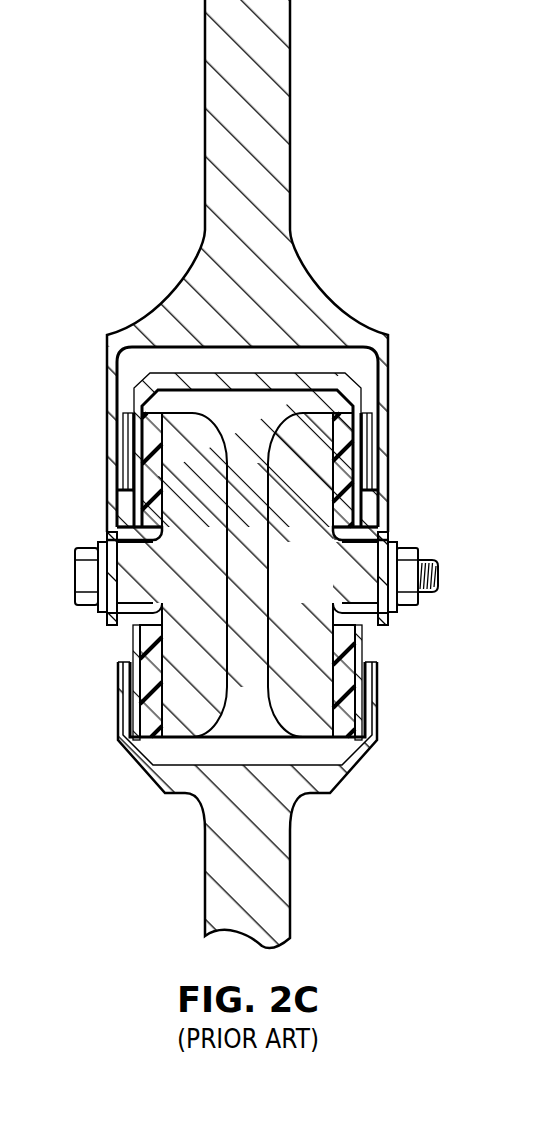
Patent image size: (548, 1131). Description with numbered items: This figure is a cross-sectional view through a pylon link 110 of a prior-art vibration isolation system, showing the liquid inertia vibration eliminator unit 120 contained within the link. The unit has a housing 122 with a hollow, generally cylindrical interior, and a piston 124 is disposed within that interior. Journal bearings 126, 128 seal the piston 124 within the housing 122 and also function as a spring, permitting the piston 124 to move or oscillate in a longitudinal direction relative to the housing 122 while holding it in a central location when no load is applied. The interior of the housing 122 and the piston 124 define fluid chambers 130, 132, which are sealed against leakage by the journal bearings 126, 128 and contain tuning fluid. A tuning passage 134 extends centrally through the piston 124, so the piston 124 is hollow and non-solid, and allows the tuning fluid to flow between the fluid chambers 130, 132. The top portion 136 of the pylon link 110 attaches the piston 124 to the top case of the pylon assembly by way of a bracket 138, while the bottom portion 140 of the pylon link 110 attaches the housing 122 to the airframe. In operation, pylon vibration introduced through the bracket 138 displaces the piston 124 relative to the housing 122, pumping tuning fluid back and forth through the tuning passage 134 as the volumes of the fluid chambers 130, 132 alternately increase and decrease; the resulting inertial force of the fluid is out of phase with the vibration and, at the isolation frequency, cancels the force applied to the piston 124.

The pylon link 110 is at (205, 82).
The top portion 136 is at (205, 138).
The liquid inertia vibration eliminator unit 120 is at (108, 375).
The housing 122 is at (362, 398).
The piston 124 is at (172, 497).
The journal bearing 126 is at (343, 458).
The journal bearing 128 is at (345, 677).
The fluid chamber 130 is at (305, 402).
The fluid chamber 132 is at (317, 750).
The tuning passage 134 is at (266, 650).
The bracket 138 is at (76, 581).
The bottom portion 140 is at (205, 898).